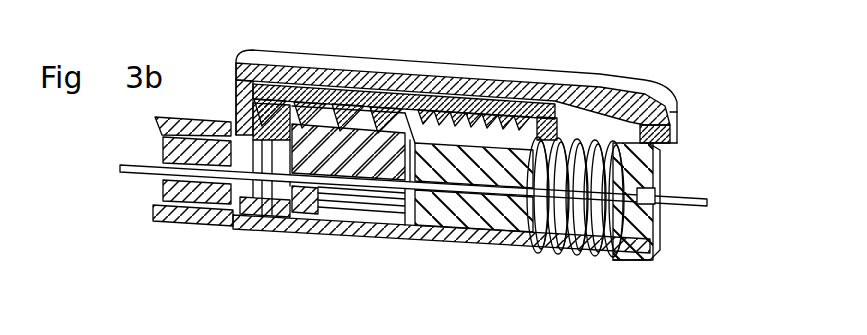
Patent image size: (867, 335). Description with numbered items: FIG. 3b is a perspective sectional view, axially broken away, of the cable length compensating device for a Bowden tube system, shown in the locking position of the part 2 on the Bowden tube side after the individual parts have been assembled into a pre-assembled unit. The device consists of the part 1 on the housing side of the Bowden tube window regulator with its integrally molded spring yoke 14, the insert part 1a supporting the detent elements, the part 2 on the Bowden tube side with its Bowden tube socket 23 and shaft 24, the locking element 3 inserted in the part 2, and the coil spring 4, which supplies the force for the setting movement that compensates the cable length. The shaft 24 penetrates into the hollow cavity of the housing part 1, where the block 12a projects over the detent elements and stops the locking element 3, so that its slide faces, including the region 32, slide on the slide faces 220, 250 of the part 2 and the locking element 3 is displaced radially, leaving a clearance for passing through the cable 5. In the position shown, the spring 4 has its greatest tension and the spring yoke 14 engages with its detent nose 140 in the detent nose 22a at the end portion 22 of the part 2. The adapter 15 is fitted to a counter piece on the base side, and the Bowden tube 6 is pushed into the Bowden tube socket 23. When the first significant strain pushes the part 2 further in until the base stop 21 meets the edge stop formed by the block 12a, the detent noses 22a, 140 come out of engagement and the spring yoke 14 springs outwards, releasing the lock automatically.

The part on the housing side 1 is at (435, 221).
The insert part 1a is at (390, 107).
The part on the Bowden tube side 2 is at (463, 218).
The locking element 3 is at (347, 160).
The spring 4 is at (531, 250).
The cable 5 is at (142, 173).
The Bowden tube 6 is at (168, 220).
The block 12a is at (276, 82).
The spring yoke 14 is at (458, 72).
The adapter 15 is at (205, 228).
The base stop 21 is at (260, 215).
The detent nose carrier portion 22 is at (650, 243).
The detent nose 22a is at (643, 132).
The Bowden tube socket 23 is at (637, 190).
The shaft 24 is at (497, 213).
The locking element portion 32 is at (272, 215).
The detent nose 140 is at (660, 145).
The slide face 220 is at (312, 207).
The slide face 250 is at (389, 196).